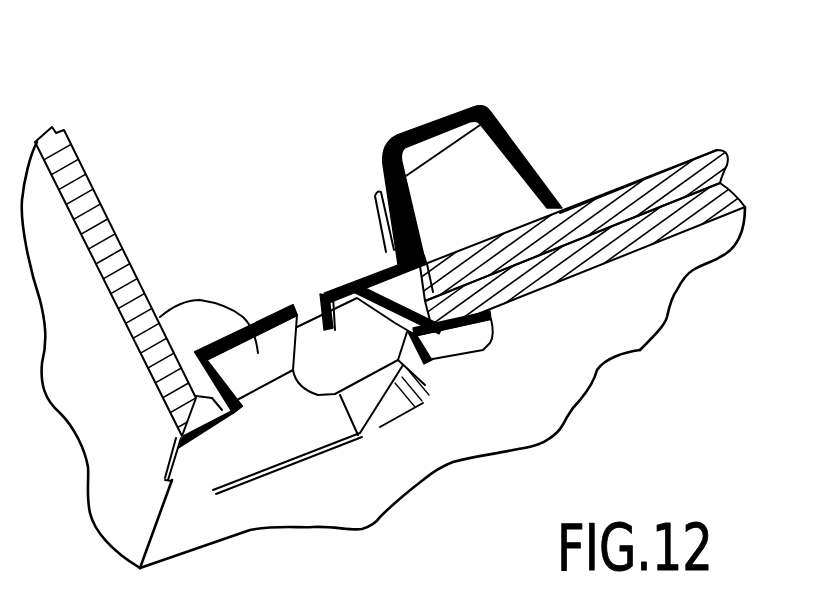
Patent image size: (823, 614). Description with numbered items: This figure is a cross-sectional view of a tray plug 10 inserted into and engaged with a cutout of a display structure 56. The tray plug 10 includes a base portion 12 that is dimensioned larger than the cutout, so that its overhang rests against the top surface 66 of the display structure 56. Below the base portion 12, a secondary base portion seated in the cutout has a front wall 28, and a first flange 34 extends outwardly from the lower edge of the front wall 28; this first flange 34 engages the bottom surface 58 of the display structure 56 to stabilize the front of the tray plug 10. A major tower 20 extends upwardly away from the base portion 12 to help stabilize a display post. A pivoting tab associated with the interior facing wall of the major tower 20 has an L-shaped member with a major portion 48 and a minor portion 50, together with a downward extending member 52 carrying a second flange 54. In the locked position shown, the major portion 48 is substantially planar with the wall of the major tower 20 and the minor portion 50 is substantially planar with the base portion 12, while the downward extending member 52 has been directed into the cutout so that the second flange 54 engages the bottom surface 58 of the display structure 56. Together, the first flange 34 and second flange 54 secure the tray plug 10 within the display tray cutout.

The tray plug 10 is at (234, 126).
The base portion 12 is at (255, 323).
The major tower 20 is at (430, 120).
The front wall 28 is at (372, 222).
The first flange 34 is at (177, 481).
The major portion 48 is at (382, 195).
The minor portion 50 is at (362, 284).
The downward extending member 52 is at (384, 327).
The second flange 54 is at (490, 330).
The display structure 56 is at (716, 150).
The bottom surface 58 is at (633, 292).
The top surface 66 is at (631, 184).